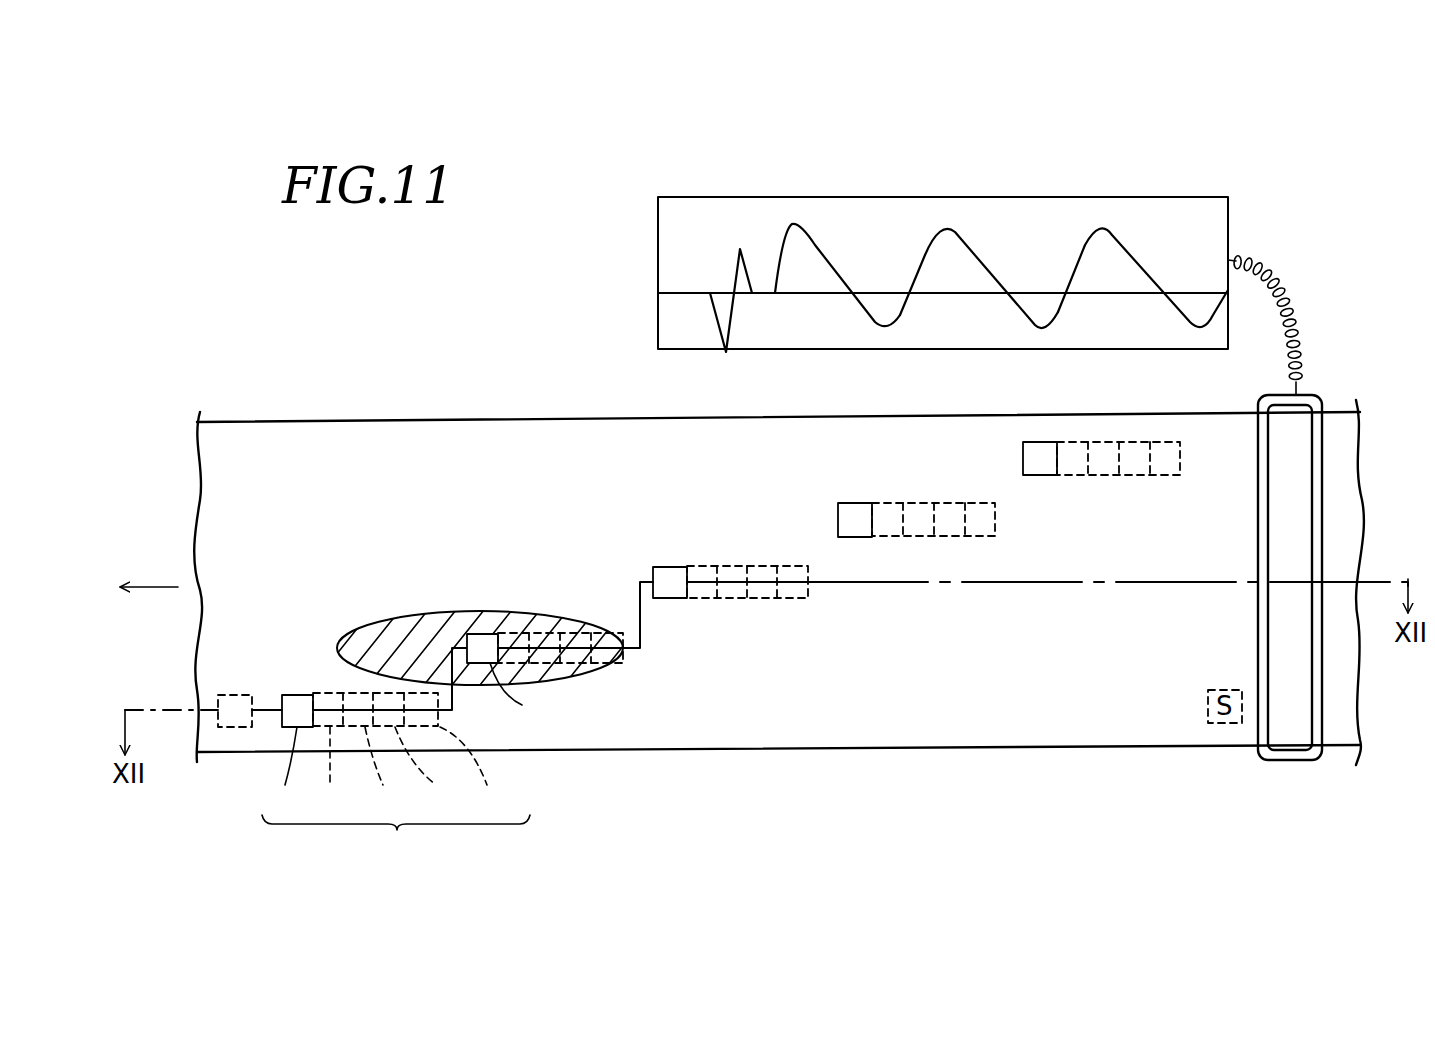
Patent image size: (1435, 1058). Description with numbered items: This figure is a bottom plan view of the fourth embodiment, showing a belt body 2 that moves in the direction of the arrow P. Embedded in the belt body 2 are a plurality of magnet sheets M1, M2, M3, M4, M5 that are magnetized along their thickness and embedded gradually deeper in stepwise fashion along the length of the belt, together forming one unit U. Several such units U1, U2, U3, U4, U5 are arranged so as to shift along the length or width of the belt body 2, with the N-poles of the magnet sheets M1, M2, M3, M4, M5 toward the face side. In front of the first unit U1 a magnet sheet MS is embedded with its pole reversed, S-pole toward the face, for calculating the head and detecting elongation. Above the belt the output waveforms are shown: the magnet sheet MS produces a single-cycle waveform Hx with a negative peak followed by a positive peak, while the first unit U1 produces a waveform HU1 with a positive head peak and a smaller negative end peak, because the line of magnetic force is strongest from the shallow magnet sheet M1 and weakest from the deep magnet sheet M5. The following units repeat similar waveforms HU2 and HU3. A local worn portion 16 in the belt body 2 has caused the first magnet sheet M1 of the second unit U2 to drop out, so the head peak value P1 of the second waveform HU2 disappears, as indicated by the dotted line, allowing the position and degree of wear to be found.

The belt body 2 is at (330, 420).
The local worn portion 16 is at (392, 618).
The arrow P (belt moving direction) P is at (178, 587).
The head peak value P1 is at (795, 225).
The output waveform of first unit HU1 is at (815, 238).
The output waveform of second unit HU2 is at (972, 238).
The output waveform of third unit HU3 is at (1127, 238).
The output waveform of magnet sheet MS Hx is at (727, 352).
The first unit U1 is at (296, 694).
The second unit U2 is at (481, 633).
The third unit U3 is at (672, 567).
The fourth unit U4 is at (857, 503).
The fifth unit U5 is at (1022, 448).
The unit U is at (396, 838).
The first magnet sheet M1 is at (285, 769).
The second magnet sheet M2 is at (337, 769).
The third magnet sheet M3 is at (387, 769).
The fourth magnet sheet M4 is at (428, 769).
The fifth magnet sheet M5 is at (476, 769).
The magnet sheet for head calculation and elongation detection MS is at (240, 727).